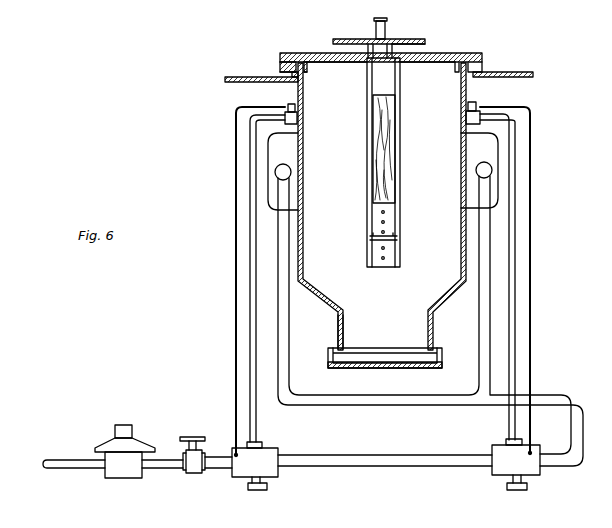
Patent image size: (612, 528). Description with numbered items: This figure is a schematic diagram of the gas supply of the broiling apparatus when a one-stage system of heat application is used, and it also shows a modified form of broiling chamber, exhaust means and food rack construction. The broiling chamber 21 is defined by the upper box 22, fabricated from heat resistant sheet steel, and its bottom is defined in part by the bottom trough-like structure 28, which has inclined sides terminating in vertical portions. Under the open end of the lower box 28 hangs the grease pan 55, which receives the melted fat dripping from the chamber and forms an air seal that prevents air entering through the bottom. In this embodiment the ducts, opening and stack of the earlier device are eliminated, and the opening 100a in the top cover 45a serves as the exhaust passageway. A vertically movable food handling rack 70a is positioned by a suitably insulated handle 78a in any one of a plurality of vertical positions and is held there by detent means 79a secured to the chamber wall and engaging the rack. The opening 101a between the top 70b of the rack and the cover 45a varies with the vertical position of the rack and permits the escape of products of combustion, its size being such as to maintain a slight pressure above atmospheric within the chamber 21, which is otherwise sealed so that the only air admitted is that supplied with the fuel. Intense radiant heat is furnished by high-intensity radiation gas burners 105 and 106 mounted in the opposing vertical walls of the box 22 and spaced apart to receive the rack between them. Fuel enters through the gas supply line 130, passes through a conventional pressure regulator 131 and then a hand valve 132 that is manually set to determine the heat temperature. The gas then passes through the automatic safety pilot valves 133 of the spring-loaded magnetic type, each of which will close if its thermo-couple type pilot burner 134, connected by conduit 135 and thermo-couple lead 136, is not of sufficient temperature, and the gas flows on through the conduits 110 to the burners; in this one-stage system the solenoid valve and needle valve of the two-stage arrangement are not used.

The broiling chamber 21 is at (431, 206).
The upper box 22 is at (466, 252).
The bottom trough-like structure 28 is at (434, 322).
The top cover 45a is at (469, 52).
The grease pan 55 is at (440, 356).
The food handling rack 70a is at (339, 36).
The top of the rack 70b is at (418, 41).
The handle 78a is at (376, 23).
The detent means 79a is at (378, 247).
The opening 100a is at (408, 56).
The opening 101a is at (338, 45).
The high-intensity radiation gas burner 105 is at (274, 156).
The high-intensity radiation gas burner 106 is at (490, 146).
The conduits 110 is at (375, 382).
The gas supply line 130 is at (57, 469).
The pressure regulator 131 is at (123, 470).
The hand valve 132 is at (192, 473).
The automatic safety pilot valve 133 is at (246, 477).
The thermo-couple type pilot burner 134 is at (289, 110).
The conduit 135 is at (251, 396).
The thermo-couple lead 136 is at (235, 378).